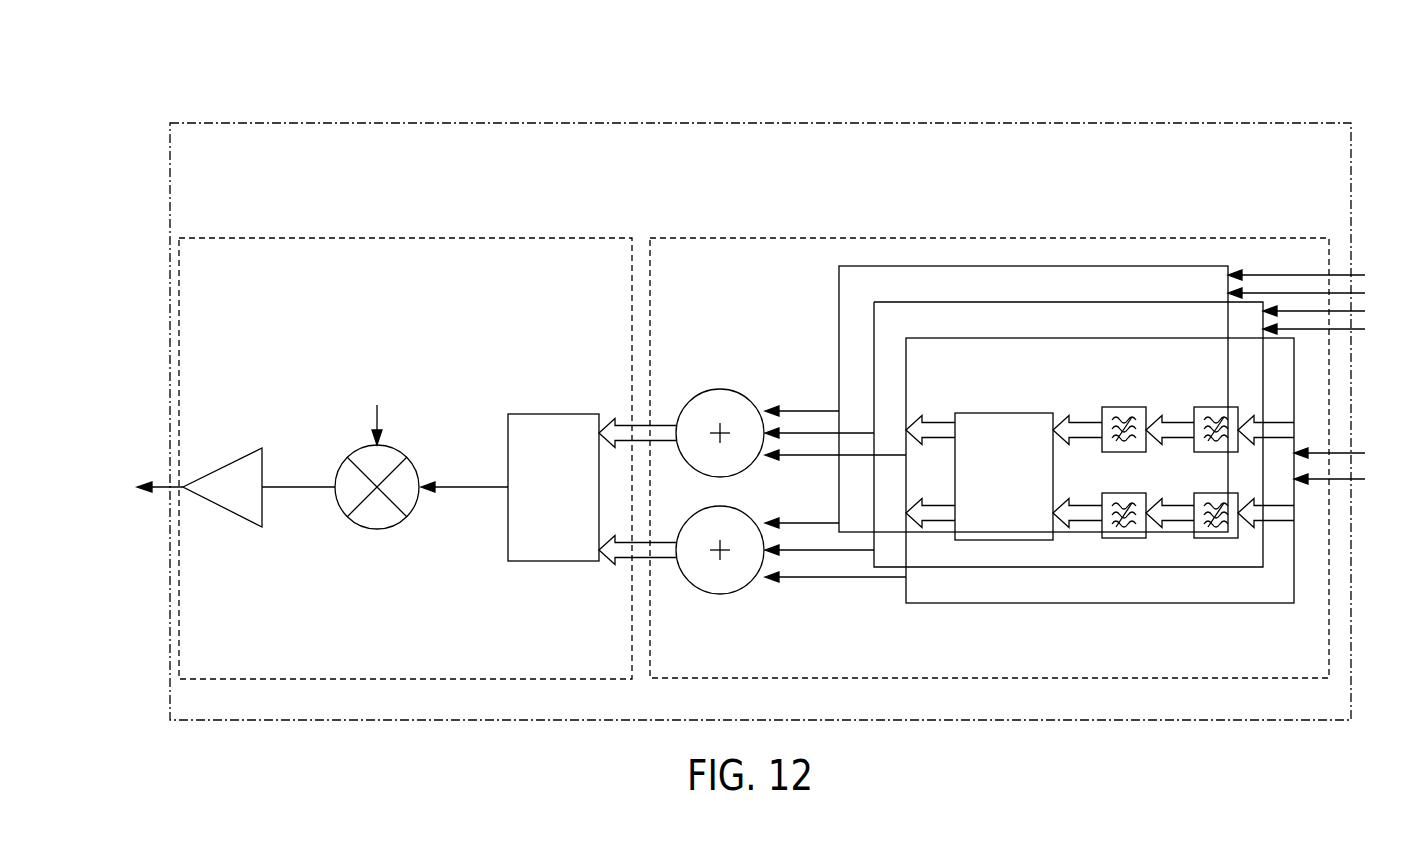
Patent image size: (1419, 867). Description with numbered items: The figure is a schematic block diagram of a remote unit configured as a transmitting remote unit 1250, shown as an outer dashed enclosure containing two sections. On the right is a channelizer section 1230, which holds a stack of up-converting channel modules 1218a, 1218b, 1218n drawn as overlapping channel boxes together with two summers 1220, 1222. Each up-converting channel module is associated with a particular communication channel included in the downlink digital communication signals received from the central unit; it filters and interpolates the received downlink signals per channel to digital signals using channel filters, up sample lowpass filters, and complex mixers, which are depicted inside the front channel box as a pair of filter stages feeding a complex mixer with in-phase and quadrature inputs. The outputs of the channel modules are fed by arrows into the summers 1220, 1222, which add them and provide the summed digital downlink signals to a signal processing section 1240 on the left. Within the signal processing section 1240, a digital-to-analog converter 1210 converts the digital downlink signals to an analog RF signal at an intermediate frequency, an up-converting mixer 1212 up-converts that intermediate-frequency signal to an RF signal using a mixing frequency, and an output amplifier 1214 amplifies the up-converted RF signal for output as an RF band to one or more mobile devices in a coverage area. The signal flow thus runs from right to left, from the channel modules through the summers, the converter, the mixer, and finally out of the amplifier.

The transmitting remote unit 1250 is at (190, 122).
The signal processing section 1240 is at (215, 237).
The channelizer section 1230 is at (680, 237).
The output amplifier 1214 is at (219, 470).
The up-converting mixer 1212 is at (395, 447).
The digital-to-analog converter 1210 is at (568, 413).
The summer 1220 is at (722, 389).
The summer 1222 is at (718, 594).
The up-converting channel module 1218a is at (927, 603).
The up-converting channel module 1218b is at (874, 338).
The up-converting channel module 1218n is at (839, 292).